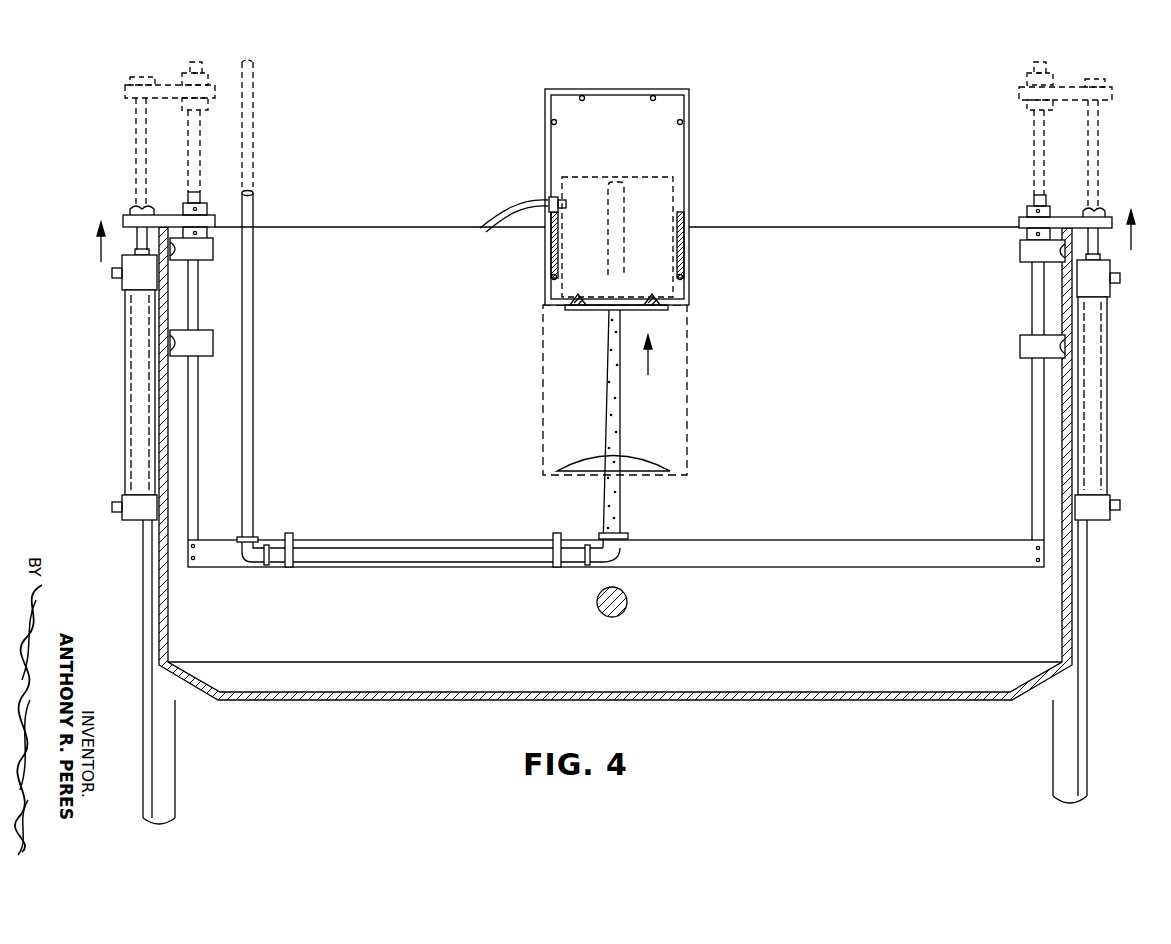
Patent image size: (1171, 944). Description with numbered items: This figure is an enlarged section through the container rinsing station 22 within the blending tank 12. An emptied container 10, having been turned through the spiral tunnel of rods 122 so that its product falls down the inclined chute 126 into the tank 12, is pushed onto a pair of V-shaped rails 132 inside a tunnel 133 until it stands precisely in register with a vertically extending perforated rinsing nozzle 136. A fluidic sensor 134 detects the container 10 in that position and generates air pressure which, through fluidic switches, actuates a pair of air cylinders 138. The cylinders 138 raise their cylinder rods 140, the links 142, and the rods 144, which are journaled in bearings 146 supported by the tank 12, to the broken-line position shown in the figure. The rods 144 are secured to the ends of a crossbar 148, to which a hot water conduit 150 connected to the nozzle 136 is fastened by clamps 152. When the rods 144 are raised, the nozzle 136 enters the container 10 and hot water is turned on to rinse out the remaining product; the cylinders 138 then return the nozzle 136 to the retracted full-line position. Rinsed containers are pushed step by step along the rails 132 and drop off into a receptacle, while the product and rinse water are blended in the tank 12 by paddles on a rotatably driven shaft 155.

The container 10 is at (680, 199).
The blending tank 12 is at (160, 548).
The container rinsing station 22 is at (611, 196).
The spiral rods 122 is at (557, 125).
The inclined chute 126 is at (688, 440).
The V-shaped rails 132 is at (575, 312).
The tunnel 133 is at (689, 147).
The fluidic sensor 134 is at (553, 197).
The perforated rinsing nozzle 136 is at (620, 414).
The air cylinders 138 is at (132, 407).
The cylinder rods 140 is at (137, 243).
The links 142 is at (163, 215).
The rods 144 is at (195, 423).
The bearings 146 is at (213, 252).
The crossbar 148 is at (763, 548).
The hot water conduit 150 is at (248, 398).
The clamps 152 is at (292, 540).
The shaft 155 is at (627, 604).